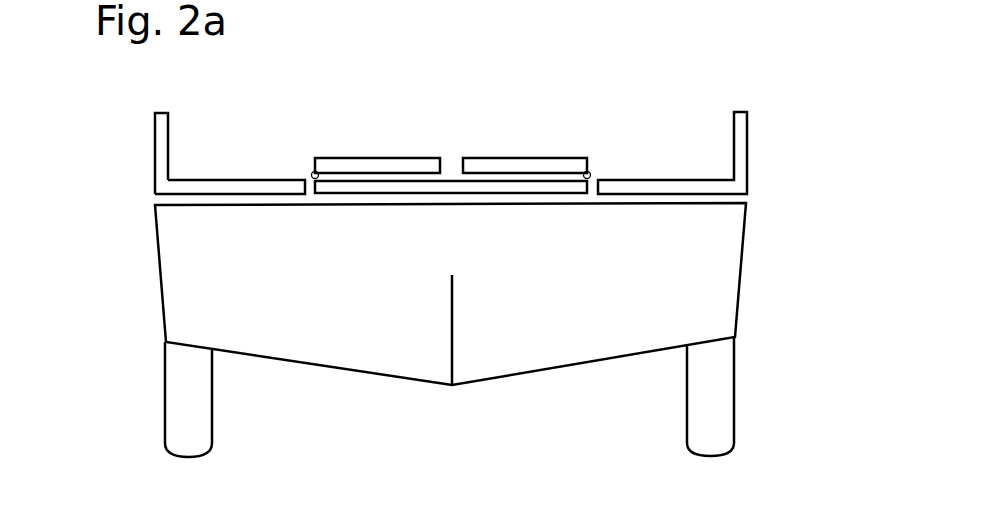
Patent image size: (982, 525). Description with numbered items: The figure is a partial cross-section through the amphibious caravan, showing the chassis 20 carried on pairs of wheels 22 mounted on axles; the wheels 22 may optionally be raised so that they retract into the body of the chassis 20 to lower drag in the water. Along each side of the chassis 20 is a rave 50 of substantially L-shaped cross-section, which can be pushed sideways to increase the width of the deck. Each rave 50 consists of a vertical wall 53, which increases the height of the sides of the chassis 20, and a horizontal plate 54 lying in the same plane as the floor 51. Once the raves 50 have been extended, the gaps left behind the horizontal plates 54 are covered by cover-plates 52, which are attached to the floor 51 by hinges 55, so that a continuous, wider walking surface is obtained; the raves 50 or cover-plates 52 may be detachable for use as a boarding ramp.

The chassis 20 is at (450, 294).
The wheels 22 is at (185, 415).
The raves 50 is at (440, 161).
The floor 51 is at (427, 187).
The cover-plates 52 is at (535, 160).
The vertical walls 53 is at (158, 150).
The horizontal plates 54 is at (197, 187).
The hinges 55 is at (312, 174).